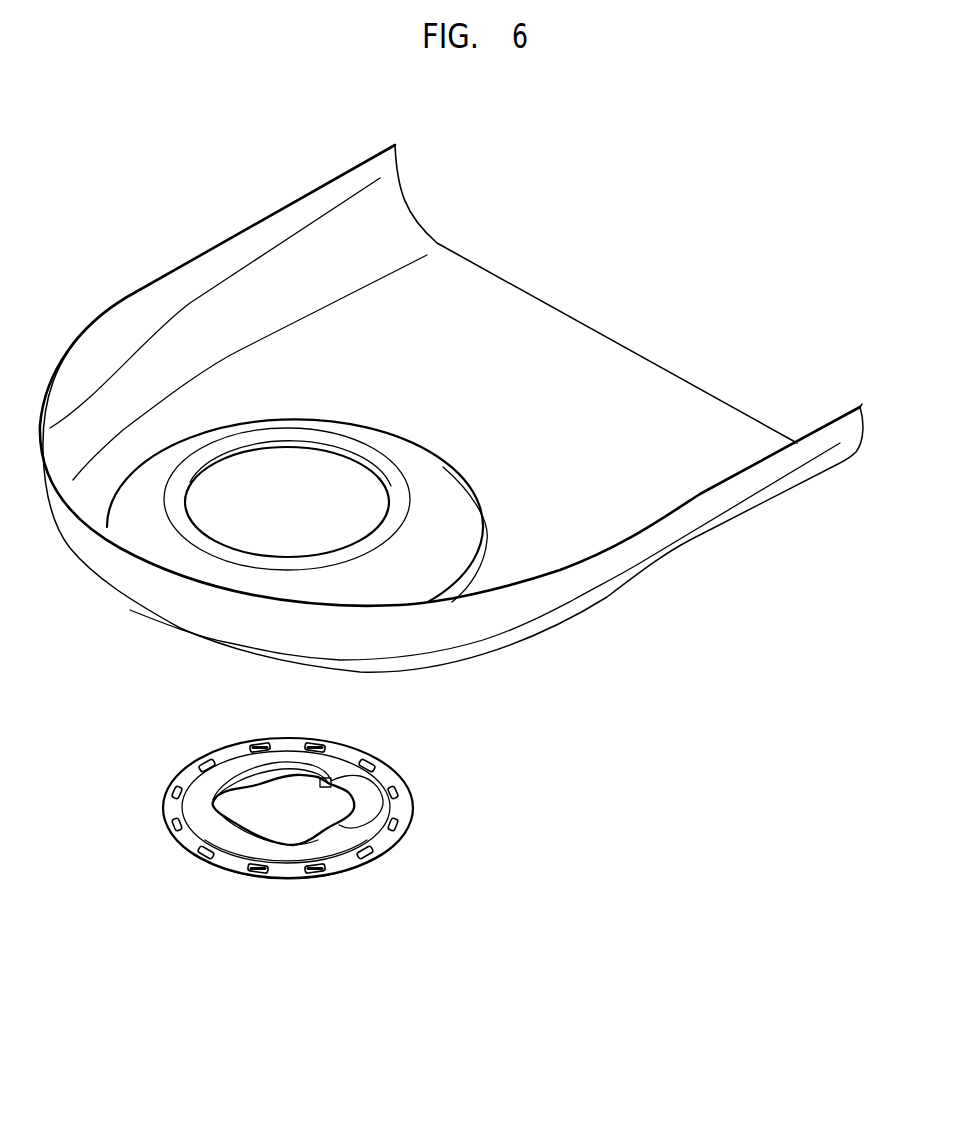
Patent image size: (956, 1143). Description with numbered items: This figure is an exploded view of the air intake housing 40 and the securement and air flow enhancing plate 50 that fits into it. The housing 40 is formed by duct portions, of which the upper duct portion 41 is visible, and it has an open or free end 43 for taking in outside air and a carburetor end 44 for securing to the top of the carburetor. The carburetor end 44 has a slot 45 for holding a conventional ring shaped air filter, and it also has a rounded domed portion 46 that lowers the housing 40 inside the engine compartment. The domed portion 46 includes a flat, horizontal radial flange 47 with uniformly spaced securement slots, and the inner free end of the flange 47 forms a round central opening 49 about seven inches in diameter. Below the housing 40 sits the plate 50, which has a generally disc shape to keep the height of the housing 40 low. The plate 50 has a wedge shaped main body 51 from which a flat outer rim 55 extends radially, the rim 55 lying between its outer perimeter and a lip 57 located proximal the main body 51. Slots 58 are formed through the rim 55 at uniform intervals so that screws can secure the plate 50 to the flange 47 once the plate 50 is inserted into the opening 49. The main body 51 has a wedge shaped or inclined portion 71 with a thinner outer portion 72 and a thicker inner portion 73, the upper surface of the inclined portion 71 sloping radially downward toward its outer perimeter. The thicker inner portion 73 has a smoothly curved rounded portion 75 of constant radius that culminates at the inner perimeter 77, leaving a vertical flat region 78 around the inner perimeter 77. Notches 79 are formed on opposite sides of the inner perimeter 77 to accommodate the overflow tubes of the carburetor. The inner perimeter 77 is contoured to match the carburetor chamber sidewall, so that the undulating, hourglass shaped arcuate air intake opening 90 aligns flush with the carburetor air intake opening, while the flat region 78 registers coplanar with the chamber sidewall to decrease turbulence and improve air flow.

The air intake housing 40 is at (632, 593).
The upper duct portion 41 is at (388, 367).
The open or free end 43 is at (623, 380).
The carburetor end 44 is at (88, 352).
The slot 45 is at (473, 543).
The rounded domed portion 46 is at (440, 520).
The flat horizontal radial flange 47 is at (388, 470).
The round central opening 49 is at (298, 512).
The securement and air flow enhancing plate 50 is at (310, 831).
The wedge shaped main body 51 is at (380, 806).
The flat outer rim 55 is at (392, 838).
The lip 57 is at (342, 858).
The slots 58 is at (256, 876).
The wedge shaped or inclined portion 71 is at (330, 758).
The thinner outer portion 72 is at (216, 753).
The thicker inner portion 73 is at (213, 797).
The rounded portion 75 is at (212, 803).
The inner perimeter 77 is at (282, 768).
The vertical flat region 78 is at (297, 770).
The notches 79 is at (390, 782).
The arcuate air intake opening 90 is at (302, 818).